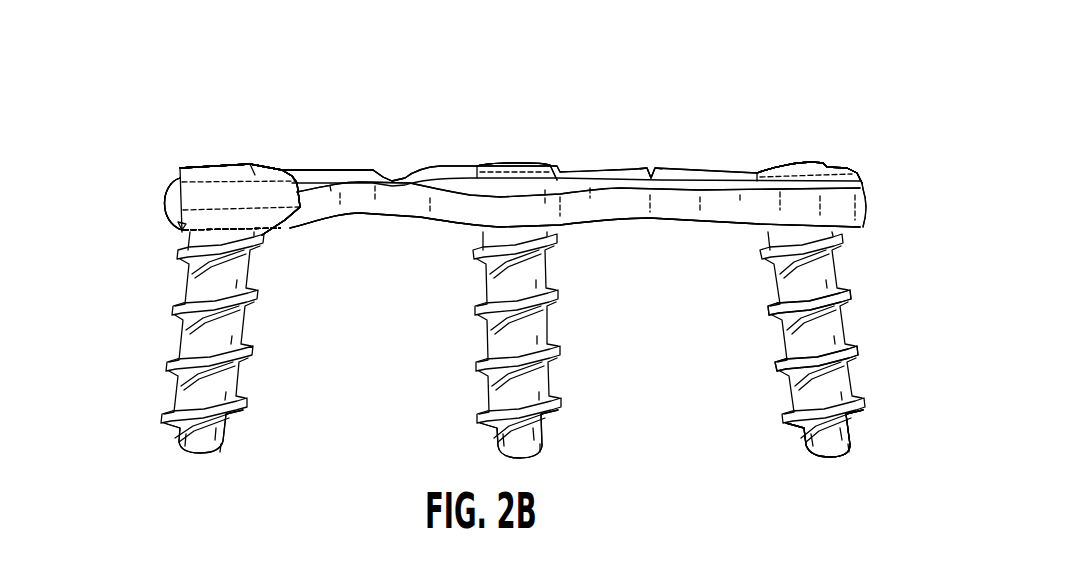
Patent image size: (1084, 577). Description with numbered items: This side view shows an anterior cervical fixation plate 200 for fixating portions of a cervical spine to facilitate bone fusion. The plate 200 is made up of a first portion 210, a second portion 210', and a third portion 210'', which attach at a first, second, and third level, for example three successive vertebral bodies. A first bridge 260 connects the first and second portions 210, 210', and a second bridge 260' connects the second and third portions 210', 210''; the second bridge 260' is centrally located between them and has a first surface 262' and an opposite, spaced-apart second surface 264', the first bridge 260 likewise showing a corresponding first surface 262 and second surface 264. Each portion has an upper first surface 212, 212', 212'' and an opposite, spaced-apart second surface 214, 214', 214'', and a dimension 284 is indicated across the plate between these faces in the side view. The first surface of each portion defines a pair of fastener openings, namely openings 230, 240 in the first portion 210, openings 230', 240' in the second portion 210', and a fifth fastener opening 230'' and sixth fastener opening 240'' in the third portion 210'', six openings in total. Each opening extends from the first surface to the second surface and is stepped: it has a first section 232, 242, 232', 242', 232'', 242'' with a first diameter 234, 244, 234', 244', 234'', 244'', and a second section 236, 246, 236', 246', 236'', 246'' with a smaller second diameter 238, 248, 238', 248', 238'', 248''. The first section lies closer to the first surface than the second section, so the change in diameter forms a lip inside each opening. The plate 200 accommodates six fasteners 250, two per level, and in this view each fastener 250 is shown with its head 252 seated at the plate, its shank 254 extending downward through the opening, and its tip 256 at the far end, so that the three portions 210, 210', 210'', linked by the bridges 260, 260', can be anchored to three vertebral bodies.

The anterior cervical fixation plate 200 is at (904, 82).
The first portion 210 is at (167, 308).
The second portion 210' is at (517, 246).
The third portion 210'' is at (810, 259).
The anchor head 212 is at (198, 185).
The anchor head 212' is at (525, 142).
The first surface of the third portion 212'' is at (834, 158).
The threaded shank 214 is at (199, 342).
The threaded shank 214' is at (536, 345).
The second surface of the third portion 214'' is at (830, 344).
The fastener opening 230 is at (123, 228).
The fastener opening 240 is at (144, 228).
The fastener opening 230' is at (489, 115).
The fastener opening 240' is at (508, 115).
The fifth fastener opening 230'' is at (730, 127).
The sixth fastener opening 240'' is at (756, 127).
The lower edge 232 is at (301, 239).
The lower edge 242 is at (322, 239).
The lower edge 232' is at (346, 239).
The lower edge 242' is at (303, 252).
The first section of the fifth fastener opening 232'' is at (328, 252).
The first section of the sixth fastener opening 242'' is at (351, 252).
The overall width 234 is at (234, 107).
The overall width 244 is at (233, 107).
The overall width 234' is at (233, 107).
The overall width 244' is at (233, 113).
The first diameter 234'' is at (233, 113).
The first diameter 244'' is at (234, 113).
The inner surface 236 is at (244, 305).
The inner surface 246 is at (265, 305).
The inner surface 236' is at (289, 305).
The inner surface 246' is at (246, 318).
The second section of the fifth fastener opening 236'' is at (271, 318).
The second section of the sixth fastener opening 246'' is at (294, 318).
The wall thickness 238 is at (232, 138).
The wall thickness 248 is at (231, 138).
The wall thickness 238' is at (231, 151).
The wall thickness 248' is at (231, 151).
The second diameter 238'' is at (321, 110).
The second diameter 248'' is at (323, 110).
The fastener 250 is at (878, 369).
The screw head 252 is at (818, 161).
The threaded shaft 254 is at (842, 309).
The screw tip 256 is at (848, 456).
The first bridge 260 is at (558, 162).
The second bridge 260' is at (578, 134).
The bridge portion 262 is at (379, 142).
The first surface of the second bridge 262' is at (662, 149).
The bottom surface 264 is at (395, 237).
The second surface of the second bridge 264' is at (680, 249).
The plate thickness 284 is at (925, 150).